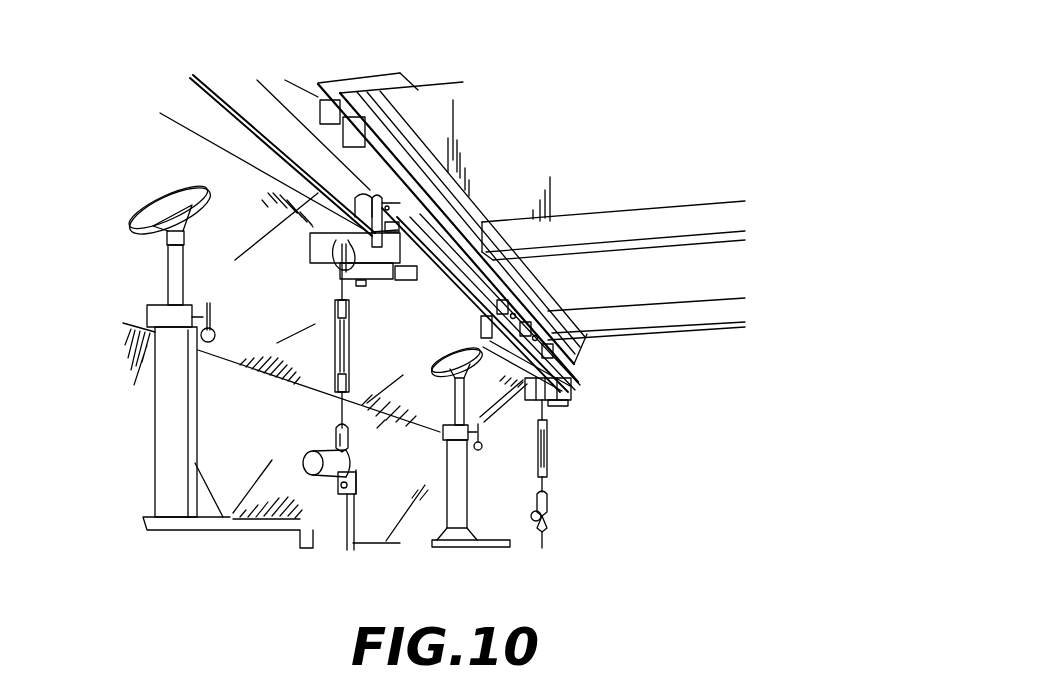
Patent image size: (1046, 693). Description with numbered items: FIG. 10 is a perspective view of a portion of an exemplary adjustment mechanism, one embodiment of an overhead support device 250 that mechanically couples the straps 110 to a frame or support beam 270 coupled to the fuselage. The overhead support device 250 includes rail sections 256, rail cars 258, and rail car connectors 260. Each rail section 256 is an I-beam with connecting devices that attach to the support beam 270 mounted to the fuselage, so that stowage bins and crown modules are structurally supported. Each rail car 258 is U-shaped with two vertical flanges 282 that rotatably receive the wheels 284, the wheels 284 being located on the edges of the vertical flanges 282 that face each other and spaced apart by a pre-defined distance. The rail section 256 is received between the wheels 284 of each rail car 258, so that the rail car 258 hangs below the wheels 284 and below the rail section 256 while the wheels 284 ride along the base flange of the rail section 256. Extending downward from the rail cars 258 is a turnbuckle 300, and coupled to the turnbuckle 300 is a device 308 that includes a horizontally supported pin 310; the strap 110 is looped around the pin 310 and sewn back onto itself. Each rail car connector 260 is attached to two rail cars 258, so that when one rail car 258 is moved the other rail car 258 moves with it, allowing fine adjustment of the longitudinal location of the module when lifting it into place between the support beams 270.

The strap 110 is at (350, 510).
The overhead support device 250 is at (610, 162).
The rail section 256 is at (214, 121).
The rail car 258 is at (357, 264).
The rail car connector 260 is at (497, 226).
The support beam 270 is at (452, 206).
The vertical flange 282 is at (413, 193).
The wheel 284 is at (332, 138).
The turnbuckle 300 is at (333, 358).
The device 308 is at (308, 461).
The pin 310 is at (334, 488).